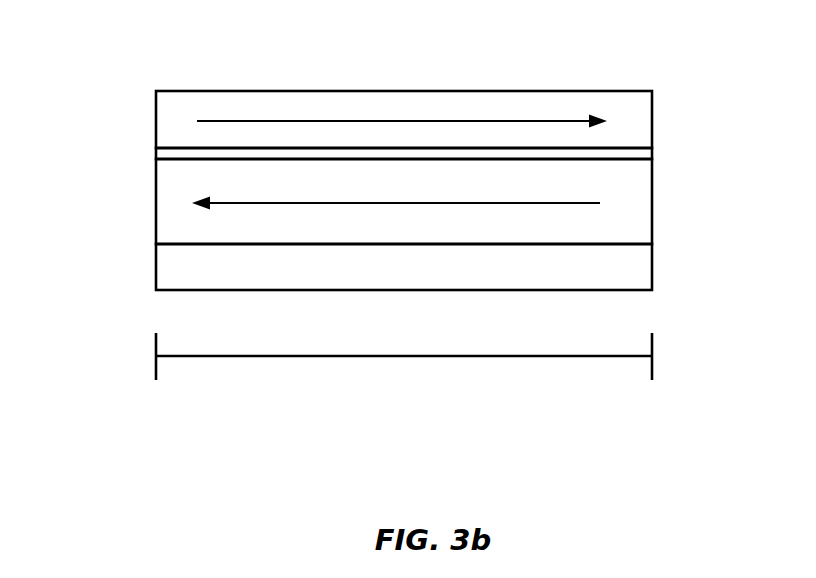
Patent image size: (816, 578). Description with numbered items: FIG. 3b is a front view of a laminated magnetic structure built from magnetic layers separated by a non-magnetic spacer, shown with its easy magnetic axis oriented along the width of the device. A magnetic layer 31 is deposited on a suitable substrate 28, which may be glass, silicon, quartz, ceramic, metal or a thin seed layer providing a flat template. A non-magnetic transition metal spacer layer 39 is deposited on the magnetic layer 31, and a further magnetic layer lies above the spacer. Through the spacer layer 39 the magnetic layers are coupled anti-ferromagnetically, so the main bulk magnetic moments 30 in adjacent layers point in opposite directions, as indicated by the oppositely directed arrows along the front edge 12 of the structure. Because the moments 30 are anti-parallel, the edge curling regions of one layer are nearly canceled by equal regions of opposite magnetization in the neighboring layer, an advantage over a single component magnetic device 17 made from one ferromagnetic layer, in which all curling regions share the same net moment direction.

The single component magnetic device 17 is at (172, 112).
The non-magnetic transition metal spacer layer 39 is at (652, 150).
The magnetic layer 31 is at (156, 221).
The substrate 28 is at (643, 282).
The magnetic moments 30 is at (402, 121).
The front edge 12 is at (403, 357).